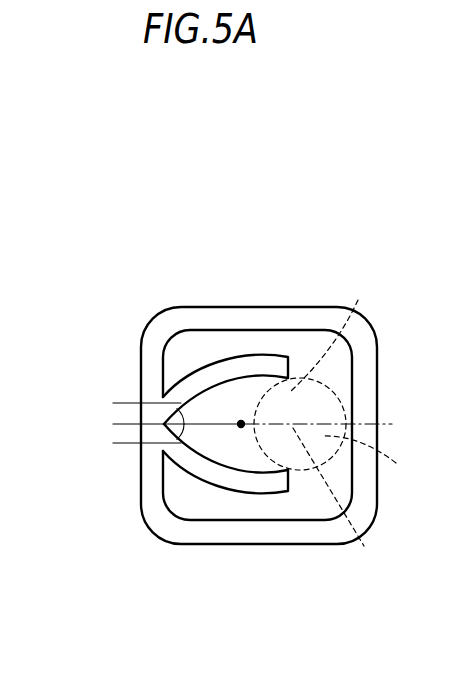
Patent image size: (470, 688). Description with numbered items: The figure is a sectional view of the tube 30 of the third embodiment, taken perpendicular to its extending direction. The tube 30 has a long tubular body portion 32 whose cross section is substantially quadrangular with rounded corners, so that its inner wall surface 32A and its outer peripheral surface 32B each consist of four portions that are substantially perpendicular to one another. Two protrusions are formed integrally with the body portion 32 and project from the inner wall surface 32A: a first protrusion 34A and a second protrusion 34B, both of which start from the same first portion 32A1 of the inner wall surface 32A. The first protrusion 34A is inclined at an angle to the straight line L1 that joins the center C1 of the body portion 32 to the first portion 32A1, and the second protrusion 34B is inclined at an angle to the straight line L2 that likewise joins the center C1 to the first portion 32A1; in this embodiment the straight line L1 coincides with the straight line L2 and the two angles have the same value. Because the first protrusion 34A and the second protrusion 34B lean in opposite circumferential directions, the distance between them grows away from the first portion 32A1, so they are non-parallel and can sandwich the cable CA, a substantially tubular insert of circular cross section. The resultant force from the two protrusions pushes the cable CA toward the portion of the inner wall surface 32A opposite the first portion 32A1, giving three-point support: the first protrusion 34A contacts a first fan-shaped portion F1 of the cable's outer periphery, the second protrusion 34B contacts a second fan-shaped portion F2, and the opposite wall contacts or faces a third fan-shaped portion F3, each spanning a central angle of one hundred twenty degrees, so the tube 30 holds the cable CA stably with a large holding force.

The tube 30 is at (290, 558).
The body portion 32 is at (248, 318).
The inner wall surface 32A is at (191, 406).
The first portion 32A1 is at (153, 365).
The outer peripheral surface 32B is at (218, 307).
The first protrusion 34A is at (198, 380).
The second protrusion 34B is at (198, 468).
The center C1 is at (241, 420).
The cable CA is at (292, 382).
The first fan-shaped portion F1 is at (332, 336).
The second fan-shaped portion F2 is at (335, 498).
The third fan-shaped portion F3 is at (371, 456).
The straight line L1 is at (288, 393).
The straight line L2 is at (386, 422).